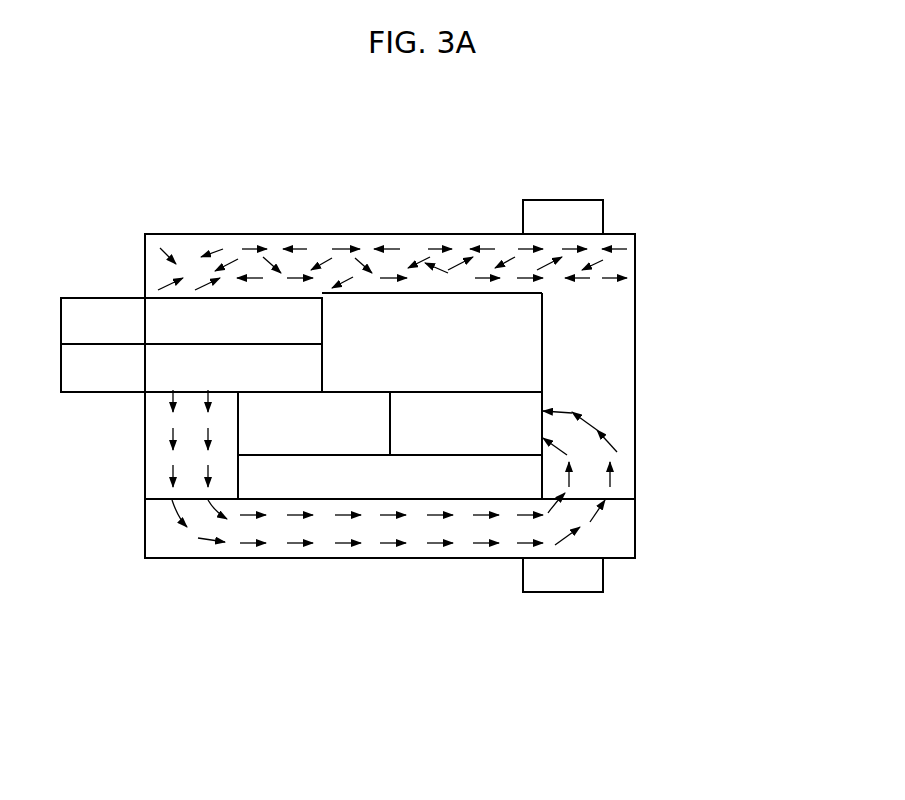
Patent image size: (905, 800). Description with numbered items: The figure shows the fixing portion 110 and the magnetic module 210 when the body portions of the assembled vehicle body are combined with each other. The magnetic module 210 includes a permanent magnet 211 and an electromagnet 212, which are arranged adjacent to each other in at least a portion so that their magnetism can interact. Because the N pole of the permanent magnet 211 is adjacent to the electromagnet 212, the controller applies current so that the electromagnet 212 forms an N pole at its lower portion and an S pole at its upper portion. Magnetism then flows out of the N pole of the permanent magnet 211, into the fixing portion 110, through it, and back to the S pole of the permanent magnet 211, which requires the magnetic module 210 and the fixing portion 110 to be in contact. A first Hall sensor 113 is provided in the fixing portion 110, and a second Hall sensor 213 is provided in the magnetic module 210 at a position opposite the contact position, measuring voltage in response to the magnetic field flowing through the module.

The magnetic module 210 is at (652, 318).
The permanent magnet 211 is at (368, 405).
The electromagnet 212 is at (98, 307).
The second Hall sensor 213 is at (563, 208).
The fixing portion 110 is at (623, 530).
The first Hall sensor 113 is at (562, 585).